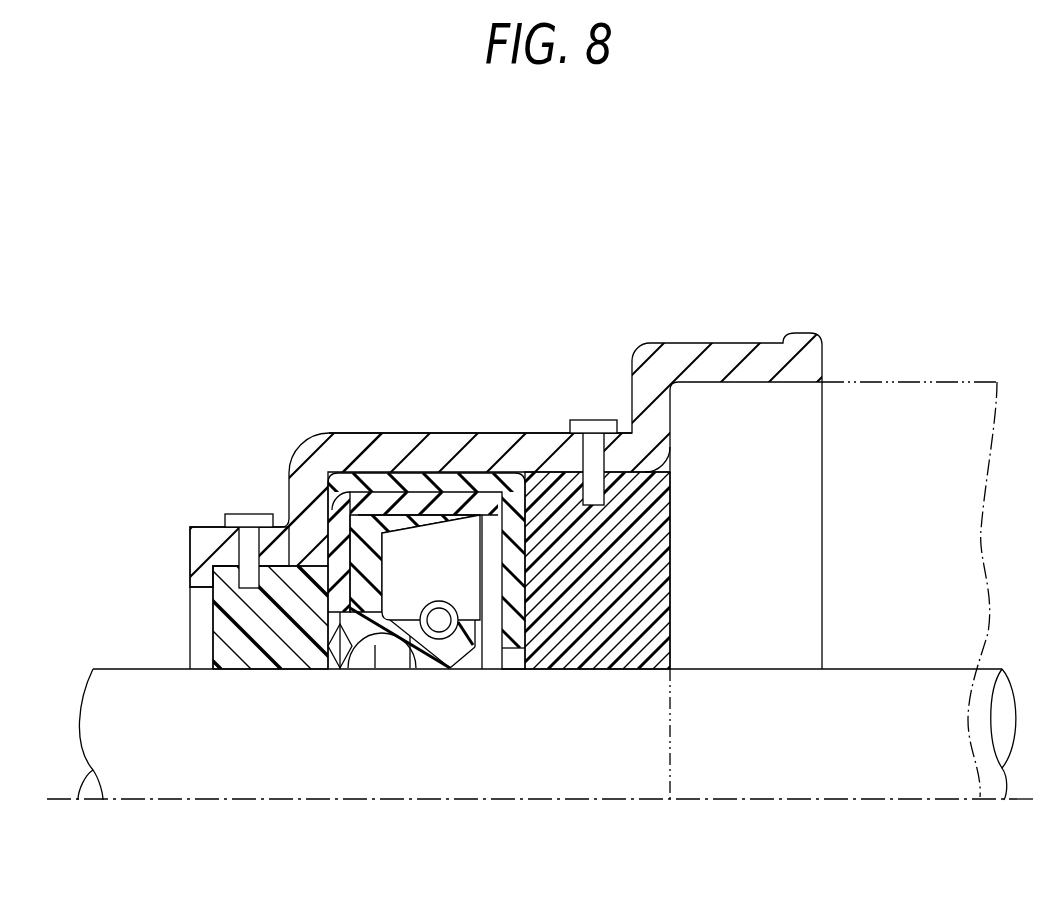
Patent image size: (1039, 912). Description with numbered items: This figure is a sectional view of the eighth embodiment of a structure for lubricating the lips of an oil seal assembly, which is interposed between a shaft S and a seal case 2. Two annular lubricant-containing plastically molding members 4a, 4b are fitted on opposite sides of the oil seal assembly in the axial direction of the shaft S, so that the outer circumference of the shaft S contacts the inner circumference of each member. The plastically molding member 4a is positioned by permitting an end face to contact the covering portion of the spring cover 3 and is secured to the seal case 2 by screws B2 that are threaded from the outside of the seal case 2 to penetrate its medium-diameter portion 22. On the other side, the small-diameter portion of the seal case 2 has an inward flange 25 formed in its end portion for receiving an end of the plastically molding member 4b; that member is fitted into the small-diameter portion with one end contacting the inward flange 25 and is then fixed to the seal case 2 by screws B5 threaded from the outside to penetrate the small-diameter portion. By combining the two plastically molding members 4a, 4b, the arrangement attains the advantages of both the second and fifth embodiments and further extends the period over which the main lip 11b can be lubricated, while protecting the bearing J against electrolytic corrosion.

The seal case 2 is at (363, 430).
The medium-diameter portion 22 is at (450, 453).
The spring cover 3 is at (497, 465).
The main lip 11b is at (447, 664).
The plastically molding member 4a is at (603, 658).
The plastically molding member 4b is at (267, 658).
The inward flange 25 is at (205, 568).
The screws B5 is at (233, 514).
The screws B2 is at (592, 420).
The shaft S is at (137, 785).
The bearing J is at (903, 382).